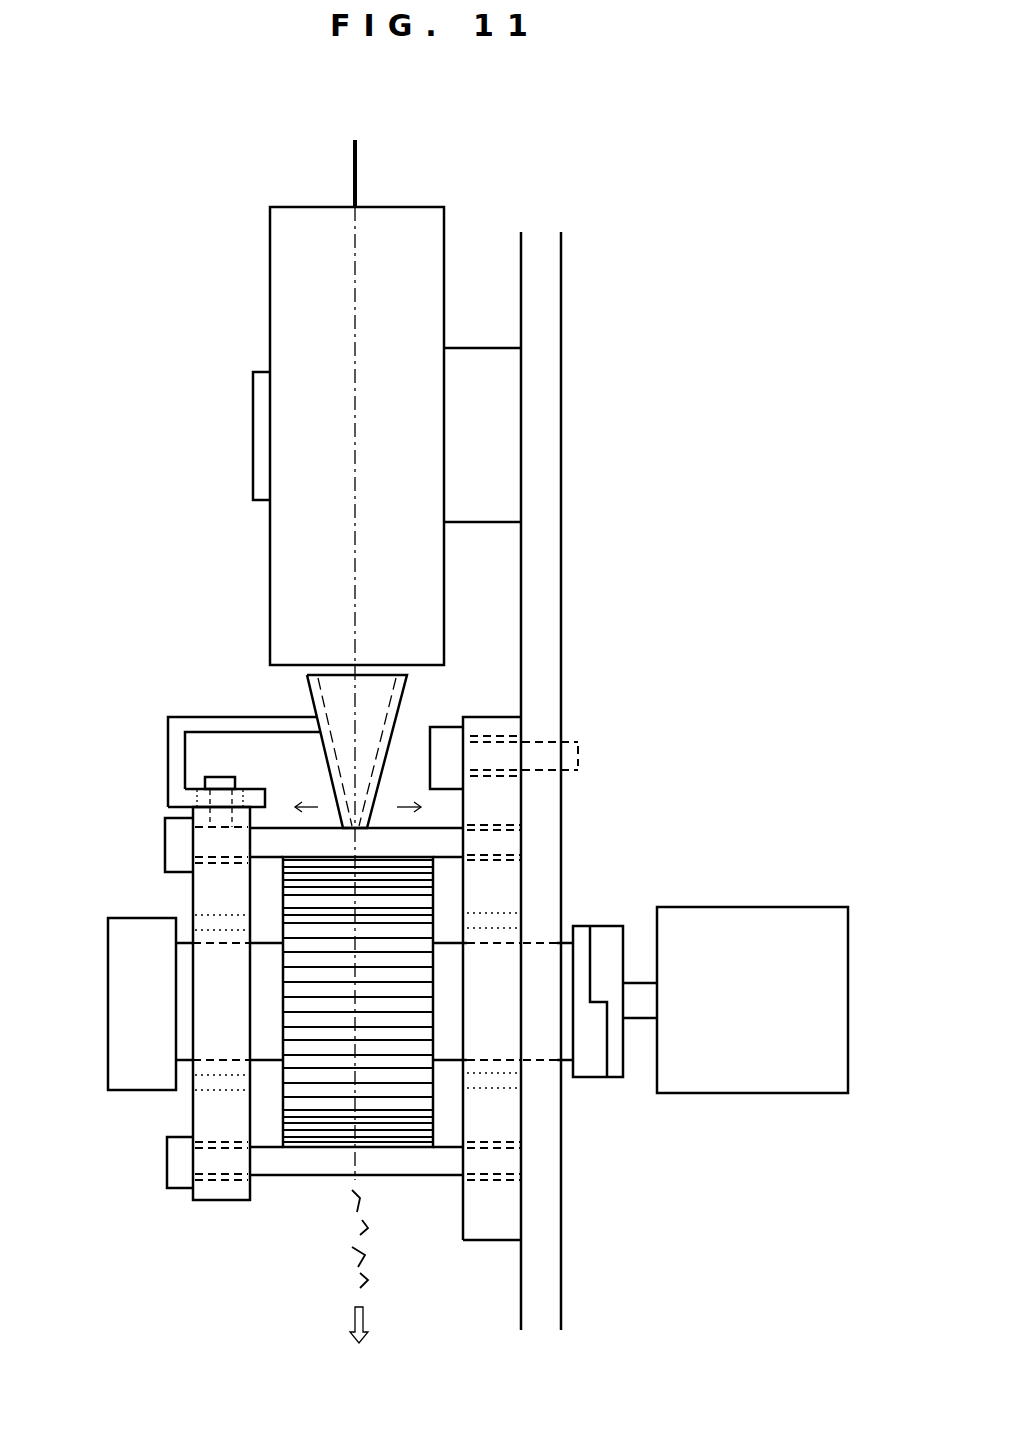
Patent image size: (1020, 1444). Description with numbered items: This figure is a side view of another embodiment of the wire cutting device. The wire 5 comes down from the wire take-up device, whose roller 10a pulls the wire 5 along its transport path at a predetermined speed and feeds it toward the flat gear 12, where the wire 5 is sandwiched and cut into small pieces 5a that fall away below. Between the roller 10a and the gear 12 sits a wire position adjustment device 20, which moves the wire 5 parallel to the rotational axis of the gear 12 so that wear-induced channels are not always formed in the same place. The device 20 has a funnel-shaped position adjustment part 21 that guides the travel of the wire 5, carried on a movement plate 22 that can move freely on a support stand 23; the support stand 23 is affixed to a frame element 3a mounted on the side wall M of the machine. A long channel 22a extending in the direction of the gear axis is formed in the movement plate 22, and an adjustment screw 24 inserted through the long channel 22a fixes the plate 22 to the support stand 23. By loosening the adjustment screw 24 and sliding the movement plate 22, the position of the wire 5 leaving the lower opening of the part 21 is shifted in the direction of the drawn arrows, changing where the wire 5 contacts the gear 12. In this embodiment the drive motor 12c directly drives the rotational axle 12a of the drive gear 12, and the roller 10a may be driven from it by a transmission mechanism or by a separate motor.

The wire 5 is at (355, 180).
The small pieces 5a is at (342, 1232).
The roller 10a is at (317, 280).
The flat gear 12 is at (405, 1098).
The rotational axle 12a is at (275, 1035).
The drive motor 12c is at (695, 905).
The frame element 3a is at (503, 892).
The wire position adjustment device 20 is at (147, 617).
The position adjustment part 21 is at (403, 697).
The movement plate 22 is at (233, 722).
The long channel 22a is at (203, 802).
The support stand 23 is at (270, 843).
The adjustment screw 24 is at (224, 777).
The side wall M is at (543, 573).